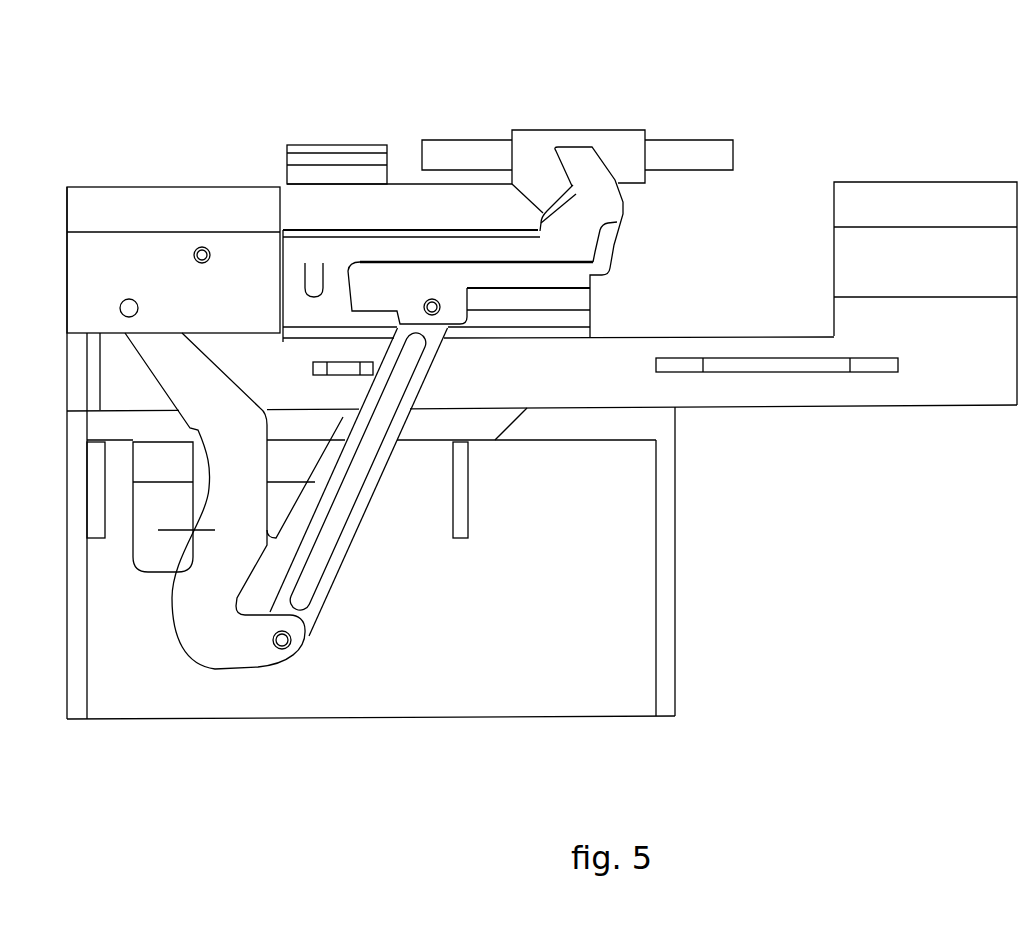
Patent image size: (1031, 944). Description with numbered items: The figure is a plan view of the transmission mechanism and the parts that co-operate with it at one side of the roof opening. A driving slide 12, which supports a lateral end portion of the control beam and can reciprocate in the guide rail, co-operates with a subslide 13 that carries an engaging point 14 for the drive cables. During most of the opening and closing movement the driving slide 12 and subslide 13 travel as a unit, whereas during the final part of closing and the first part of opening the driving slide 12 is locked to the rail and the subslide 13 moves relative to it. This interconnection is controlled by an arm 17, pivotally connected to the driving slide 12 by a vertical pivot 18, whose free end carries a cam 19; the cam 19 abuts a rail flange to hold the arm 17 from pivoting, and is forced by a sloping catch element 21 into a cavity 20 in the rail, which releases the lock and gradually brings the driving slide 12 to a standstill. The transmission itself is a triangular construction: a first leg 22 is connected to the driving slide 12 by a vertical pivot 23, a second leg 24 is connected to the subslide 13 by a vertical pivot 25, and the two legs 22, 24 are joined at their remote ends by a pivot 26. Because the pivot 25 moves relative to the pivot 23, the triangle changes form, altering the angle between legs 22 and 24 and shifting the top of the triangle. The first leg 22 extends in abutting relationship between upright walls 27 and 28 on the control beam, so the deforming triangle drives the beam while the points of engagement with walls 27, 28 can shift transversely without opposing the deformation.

The driving slide 12 is at (883, 195).
The subslide 13 is at (573, 300).
The engaging point 14 is at (316, 160).
The arm 17 is at (341, 283).
The vertical pivot 18 is at (203, 247).
The cam 19 is at (585, 168).
The cavity 20 is at (568, 148).
The catch element 21 is at (535, 182).
The first leg 22 is at (207, 650).
The vertical pivot 23 is at (128, 299).
The second leg 24 is at (330, 547).
The vertical pivot 25 is at (430, 299).
The pivot 26 is at (282, 650).
The upright wall 27 is at (148, 572).
The upright wall 28 is at (292, 514).